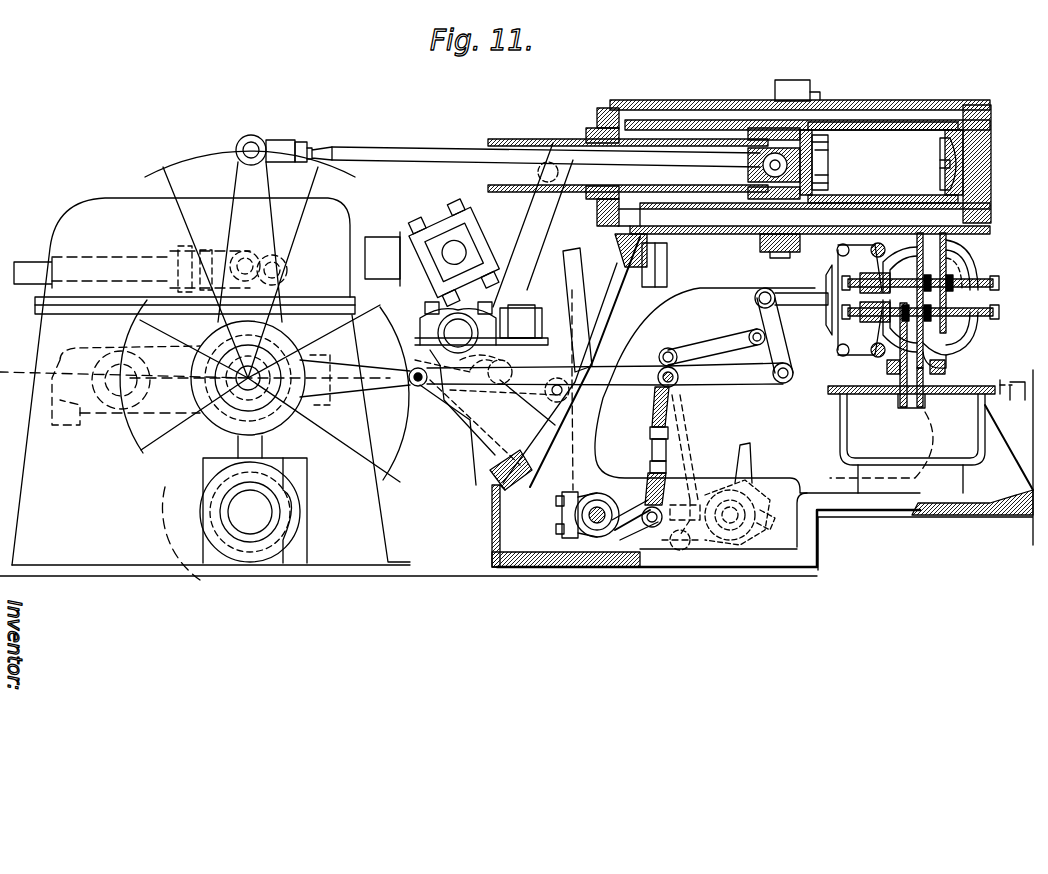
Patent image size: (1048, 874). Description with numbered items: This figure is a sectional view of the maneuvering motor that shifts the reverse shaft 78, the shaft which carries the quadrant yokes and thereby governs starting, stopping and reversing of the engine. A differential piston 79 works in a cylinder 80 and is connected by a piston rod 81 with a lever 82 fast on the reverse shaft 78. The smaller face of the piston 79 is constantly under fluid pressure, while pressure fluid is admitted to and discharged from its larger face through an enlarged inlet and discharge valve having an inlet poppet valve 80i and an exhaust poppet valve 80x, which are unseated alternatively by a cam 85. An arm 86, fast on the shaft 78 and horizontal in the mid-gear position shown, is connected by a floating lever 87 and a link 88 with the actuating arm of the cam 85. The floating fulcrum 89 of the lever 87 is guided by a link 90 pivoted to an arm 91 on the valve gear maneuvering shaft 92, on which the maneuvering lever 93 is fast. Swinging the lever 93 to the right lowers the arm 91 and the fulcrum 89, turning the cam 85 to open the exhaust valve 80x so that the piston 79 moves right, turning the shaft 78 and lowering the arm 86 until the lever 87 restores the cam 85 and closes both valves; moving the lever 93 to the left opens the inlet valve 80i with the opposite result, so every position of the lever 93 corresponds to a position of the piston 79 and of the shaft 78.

The reverse shaft 78 is at (285, 350).
The piston 79 is at (520, 146).
The cylinder 80 is at (692, 110).
The inlet poppet valve 80i is at (960, 274).
The exhaust poppet valve 80x is at (975, 326).
The piston rod 81 is at (378, 150).
The lever 82 is at (240, 190).
The cam 85 is at (797, 306).
The arm 86 is at (372, 388).
The floating lever 87 is at (470, 390).
The link 88 is at (782, 349).
The floating fulcrum 89 is at (678, 390).
The link 90 is at (672, 443).
The arm 91 is at (632, 528).
The valve gear maneuvering shaft 92 is at (598, 536).
The maneuvering lever 93 is at (584, 256).